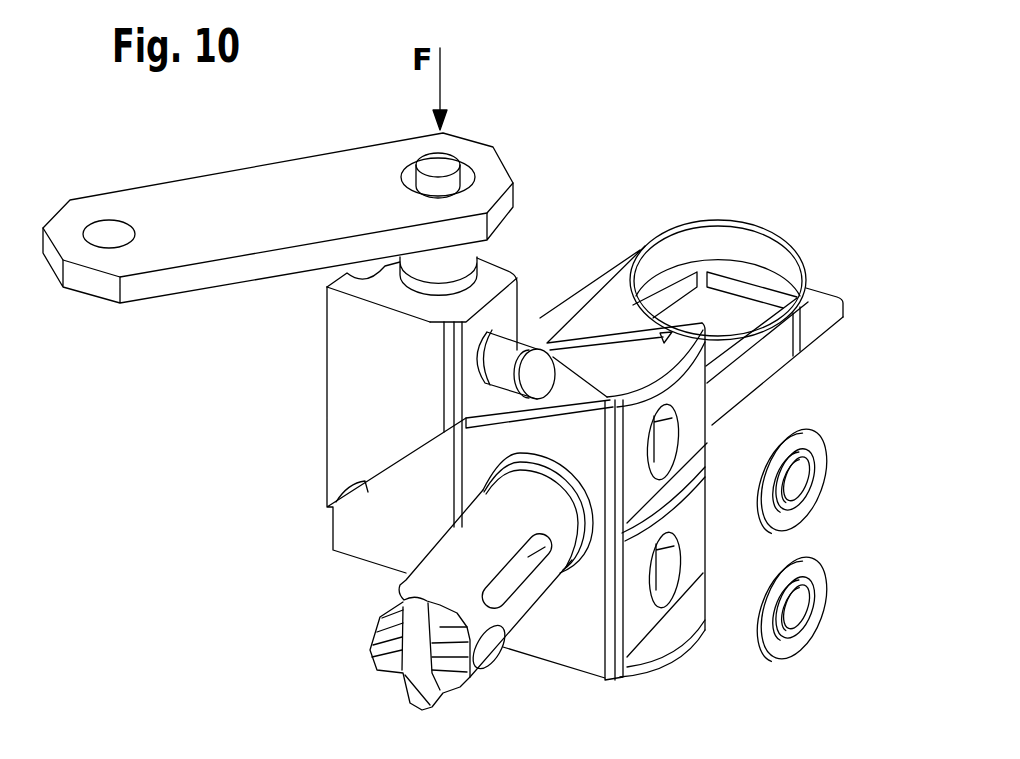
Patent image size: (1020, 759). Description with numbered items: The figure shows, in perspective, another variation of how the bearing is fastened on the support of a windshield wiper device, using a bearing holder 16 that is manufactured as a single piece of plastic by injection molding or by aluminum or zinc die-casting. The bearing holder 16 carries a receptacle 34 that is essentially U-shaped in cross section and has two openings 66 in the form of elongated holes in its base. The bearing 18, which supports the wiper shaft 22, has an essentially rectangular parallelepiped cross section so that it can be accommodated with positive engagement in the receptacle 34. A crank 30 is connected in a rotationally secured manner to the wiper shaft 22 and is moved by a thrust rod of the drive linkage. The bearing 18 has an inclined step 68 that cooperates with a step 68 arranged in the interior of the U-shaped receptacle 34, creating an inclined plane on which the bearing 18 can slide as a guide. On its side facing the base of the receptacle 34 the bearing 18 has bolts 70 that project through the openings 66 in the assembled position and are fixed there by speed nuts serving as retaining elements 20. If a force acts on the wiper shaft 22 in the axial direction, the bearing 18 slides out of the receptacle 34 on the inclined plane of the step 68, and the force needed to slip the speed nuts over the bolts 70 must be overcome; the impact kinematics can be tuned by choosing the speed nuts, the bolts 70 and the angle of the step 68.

The bearing holder 16 is at (674, 157).
The bearing 18 is at (353, 375).
The retaining elements 20 is at (812, 446).
The wiper shaft 22 is at (443, 160).
The crank 30 is at (207, 197).
The receptacle 34 is at (670, 367).
The openings 66 is at (672, 428).
The step 68 is at (362, 485).
The bolts 70 is at (516, 350).